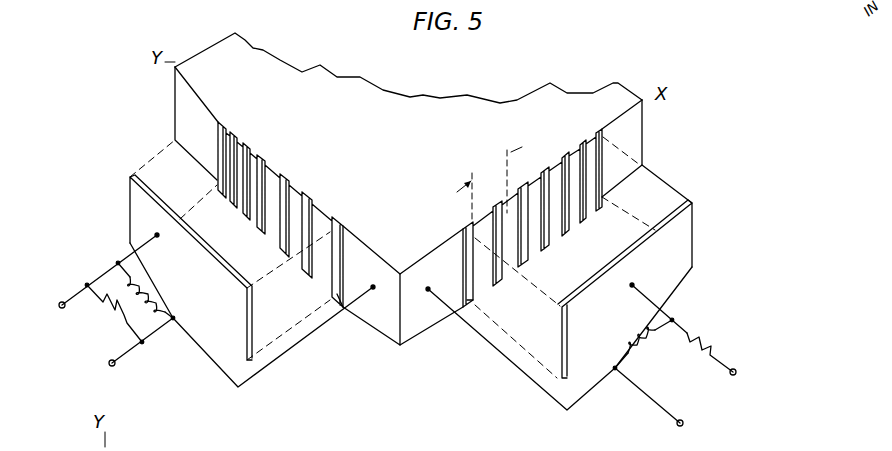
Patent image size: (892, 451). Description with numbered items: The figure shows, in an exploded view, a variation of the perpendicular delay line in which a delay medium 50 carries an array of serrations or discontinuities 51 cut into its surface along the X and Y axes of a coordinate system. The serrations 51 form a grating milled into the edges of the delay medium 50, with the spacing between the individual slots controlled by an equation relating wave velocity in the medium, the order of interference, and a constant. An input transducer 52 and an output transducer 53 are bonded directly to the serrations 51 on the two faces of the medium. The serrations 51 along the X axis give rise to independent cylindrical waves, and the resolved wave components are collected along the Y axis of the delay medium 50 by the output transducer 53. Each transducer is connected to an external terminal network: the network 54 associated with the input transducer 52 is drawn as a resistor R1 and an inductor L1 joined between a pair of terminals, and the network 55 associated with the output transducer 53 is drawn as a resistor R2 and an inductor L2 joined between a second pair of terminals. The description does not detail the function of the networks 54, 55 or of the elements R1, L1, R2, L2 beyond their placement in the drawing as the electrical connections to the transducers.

The delay medium 50 is at (440, 103).
The serrations 51 is at (467, 300).
The input transducer 52 is at (683, 225).
The output transducer 53 is at (140, 210).
The right terminal circuit 54 is at (750, 360).
The left terminal circuit 55 is at (47, 297).
The resistor R1 is at (723, 330).
The inductor L1 is at (657, 350).
The resistor R2 is at (127, 327).
The inductor L2 is at (158, 317).